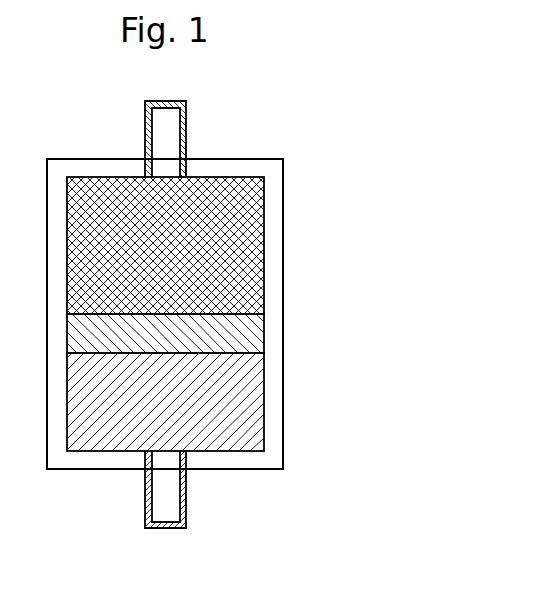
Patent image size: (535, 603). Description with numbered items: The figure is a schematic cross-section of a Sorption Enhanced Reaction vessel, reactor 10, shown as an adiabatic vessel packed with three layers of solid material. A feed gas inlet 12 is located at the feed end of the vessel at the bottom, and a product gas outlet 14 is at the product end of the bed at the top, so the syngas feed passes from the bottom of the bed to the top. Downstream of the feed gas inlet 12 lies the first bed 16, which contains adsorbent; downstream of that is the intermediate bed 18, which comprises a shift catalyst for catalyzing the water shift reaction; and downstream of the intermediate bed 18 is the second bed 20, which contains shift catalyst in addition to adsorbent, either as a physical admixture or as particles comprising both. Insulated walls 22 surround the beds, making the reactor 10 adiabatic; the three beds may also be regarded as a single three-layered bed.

The reactor 10 is at (248, 317).
The feed gas inlet 12 is at (186, 488).
The product gas outlet 14 is at (186, 140).
The first bed 16 is at (264, 397).
The intermediate bed 18 is at (264, 332).
The second bed 20 is at (264, 245).
The insulated walls 22 is at (283, 460).